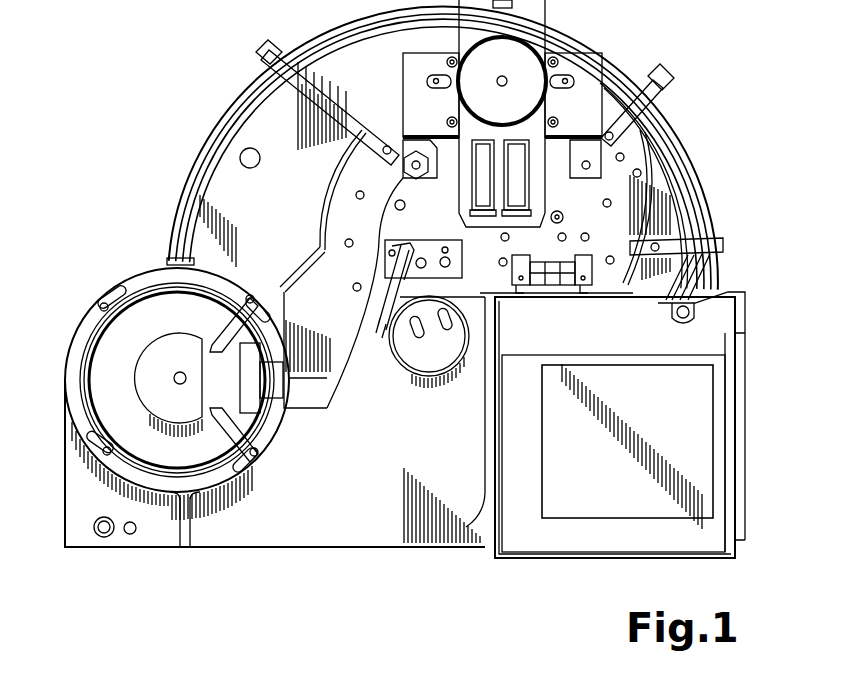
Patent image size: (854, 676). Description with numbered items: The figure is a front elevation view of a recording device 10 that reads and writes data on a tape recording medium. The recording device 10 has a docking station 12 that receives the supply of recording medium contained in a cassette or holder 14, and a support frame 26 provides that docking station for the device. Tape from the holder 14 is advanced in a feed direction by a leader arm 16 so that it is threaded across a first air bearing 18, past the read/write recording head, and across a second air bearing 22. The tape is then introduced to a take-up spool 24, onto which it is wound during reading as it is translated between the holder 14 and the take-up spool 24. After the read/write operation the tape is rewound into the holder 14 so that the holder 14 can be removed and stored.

The recording device 10 is at (192, 92).
The docking station 12 is at (486, 522).
The cassette or holder 14 is at (698, 408).
The leader arm 16 is at (740, 297).
The first air bearing 18 is at (644, 157).
The second air bearing 22 is at (352, 184).
The take-up spool 24 is at (302, 437).
The support frame 26 is at (228, 221).